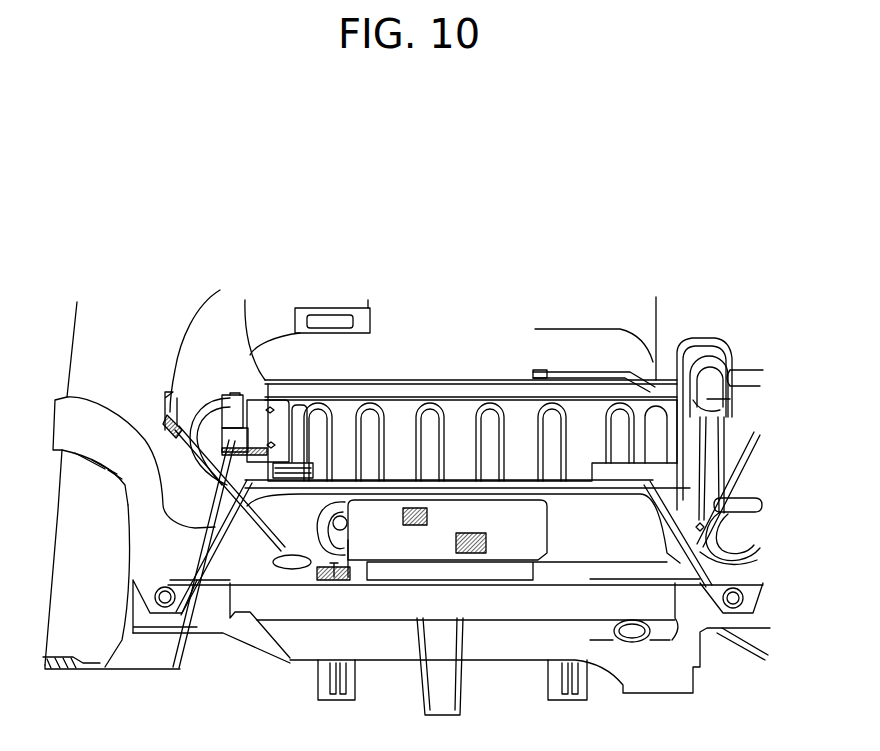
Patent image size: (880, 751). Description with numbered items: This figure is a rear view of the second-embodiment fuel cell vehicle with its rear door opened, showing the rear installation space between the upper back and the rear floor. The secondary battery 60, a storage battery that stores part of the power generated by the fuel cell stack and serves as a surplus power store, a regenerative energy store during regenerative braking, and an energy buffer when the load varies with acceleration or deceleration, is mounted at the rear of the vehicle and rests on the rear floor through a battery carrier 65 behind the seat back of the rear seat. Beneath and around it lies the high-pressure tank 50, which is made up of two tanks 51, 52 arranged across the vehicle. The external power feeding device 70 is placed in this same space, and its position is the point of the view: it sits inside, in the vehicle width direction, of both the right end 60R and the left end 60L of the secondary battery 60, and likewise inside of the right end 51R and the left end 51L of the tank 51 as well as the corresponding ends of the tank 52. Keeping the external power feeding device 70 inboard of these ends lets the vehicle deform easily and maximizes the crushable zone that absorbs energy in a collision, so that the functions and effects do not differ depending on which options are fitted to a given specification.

The high-pressure tank 50 is at (451, 501).
The high-pressure tank 51 is at (564, 547).
The left end of high-pressure tank 51L is at (178, 665).
The right end of high-pressure tank 51R is at (762, 507).
The high-pressure tank 52 is at (717, 333).
The secondary battery 60 is at (455, 417).
The left end of secondary battery 60L is at (265, 395).
The right end of secondary battery 60R is at (680, 425).
The battery carrier 65 is at (162, 503).
The external power feeding device 70 is at (415, 548).